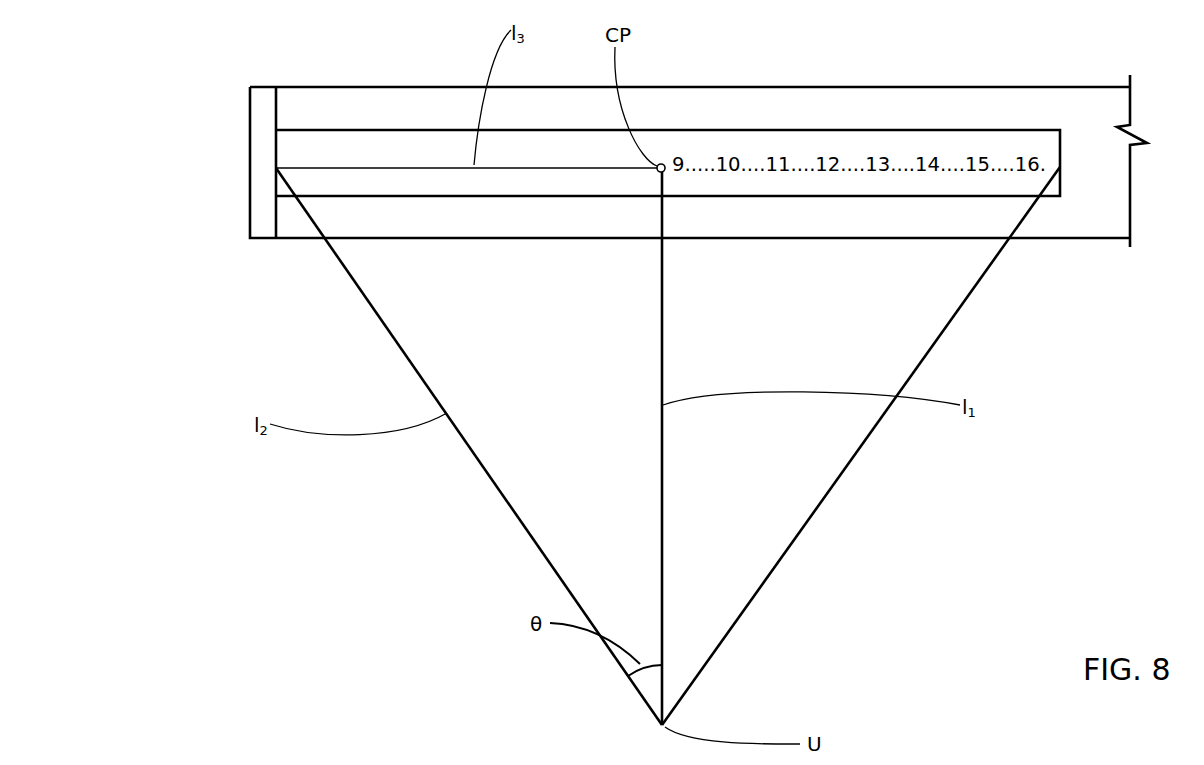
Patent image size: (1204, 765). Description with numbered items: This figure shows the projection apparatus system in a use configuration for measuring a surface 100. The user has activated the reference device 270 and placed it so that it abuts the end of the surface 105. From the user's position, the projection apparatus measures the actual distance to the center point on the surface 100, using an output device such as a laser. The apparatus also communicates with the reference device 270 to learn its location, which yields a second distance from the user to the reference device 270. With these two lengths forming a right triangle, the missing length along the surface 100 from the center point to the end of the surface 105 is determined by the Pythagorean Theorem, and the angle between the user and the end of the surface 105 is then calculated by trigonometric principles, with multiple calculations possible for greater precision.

The surface 100 is at (313, 87).
The end of the surface 105 is at (276, 166).
The reference device 270 is at (250, 198).